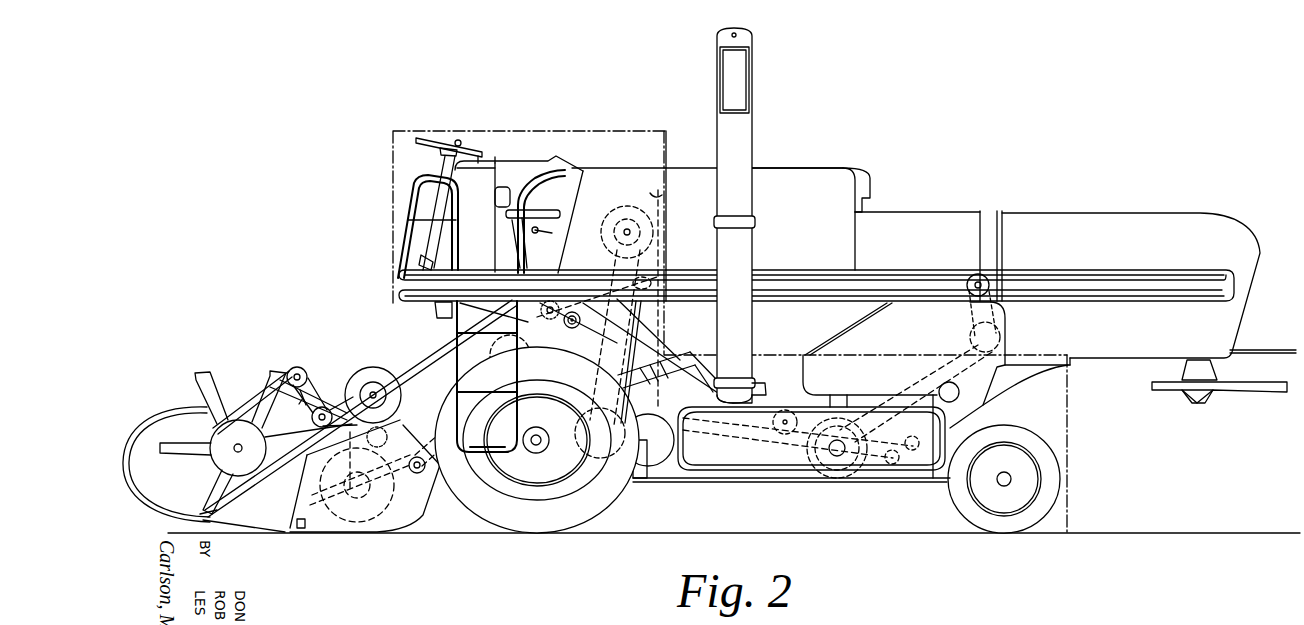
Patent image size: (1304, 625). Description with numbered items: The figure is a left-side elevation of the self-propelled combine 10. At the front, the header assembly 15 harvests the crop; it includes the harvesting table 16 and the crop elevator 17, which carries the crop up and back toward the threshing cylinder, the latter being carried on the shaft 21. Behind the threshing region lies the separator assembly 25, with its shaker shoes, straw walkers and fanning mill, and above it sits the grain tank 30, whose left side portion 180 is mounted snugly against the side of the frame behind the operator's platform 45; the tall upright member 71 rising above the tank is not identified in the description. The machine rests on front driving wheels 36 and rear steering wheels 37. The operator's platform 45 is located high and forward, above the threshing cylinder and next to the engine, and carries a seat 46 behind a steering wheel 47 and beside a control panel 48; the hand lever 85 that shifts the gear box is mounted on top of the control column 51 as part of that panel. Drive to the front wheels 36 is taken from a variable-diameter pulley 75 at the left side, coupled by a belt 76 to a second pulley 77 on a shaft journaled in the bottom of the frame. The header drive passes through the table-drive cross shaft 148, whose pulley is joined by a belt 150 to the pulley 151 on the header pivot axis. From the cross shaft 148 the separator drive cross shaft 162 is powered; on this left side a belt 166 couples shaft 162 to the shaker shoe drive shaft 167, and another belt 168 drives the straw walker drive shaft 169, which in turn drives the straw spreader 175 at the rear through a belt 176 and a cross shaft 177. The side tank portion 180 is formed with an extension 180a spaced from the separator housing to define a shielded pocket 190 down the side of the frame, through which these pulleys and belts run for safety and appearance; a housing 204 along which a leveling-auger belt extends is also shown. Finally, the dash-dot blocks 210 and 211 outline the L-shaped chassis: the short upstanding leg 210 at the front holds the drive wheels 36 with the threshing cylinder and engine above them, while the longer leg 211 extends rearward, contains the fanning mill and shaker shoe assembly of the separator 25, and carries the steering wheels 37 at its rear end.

The combine 10 is at (952, 210).
The header assembly 15 is at (333, 395).
The harvesting table 16 is at (273, 517).
The crop elevator 17 is at (426, 378).
The shaft 21 is at (572, 310).
The separator assembly 25 is at (1073, 215).
The grain tank 30 is at (780, 166).
The front driving wheels 36 is at (593, 513).
The rear steering wheels 37 is at (966, 507).
The operator's platform 45 is at (474, 266).
The seat 46 is at (497, 195).
The steering wheel 47 is at (424, 140).
The control panel 48 is at (490, 158).
The operator's control column 51 is at (462, 195).
The unloading auger tube 71 is at (740, 257).
The pulley 75 is at (617, 208).
The belt 76 is at (631, 348).
The second pulley 77 is at (600, 467).
The hand lever 85 is at (460, 140).
The table-drive cross shaft 148 is at (660, 267).
The belt 150 is at (573, 343).
The pulley 151 is at (527, 330).
The separator drive cross shaft 162 is at (682, 368).
The belt 166 is at (726, 442).
The shaker shoe drive shaft 167 is at (838, 447).
The belt 168 is at (877, 400).
The straw walker drive shaft 169 is at (1005, 332).
The straw spreader 175 is at (1243, 390).
The belt 176 is at (990, 280).
The cross shaft 177 is at (975, 292).
The side portion 180 is at (810, 180).
The extension 180a is at (613, 177).
The shielded pocket 190 is at (663, 196).
The housing 204 is at (870, 182).
The block 210 is at (557, 130).
The block 211 is at (1067, 405).